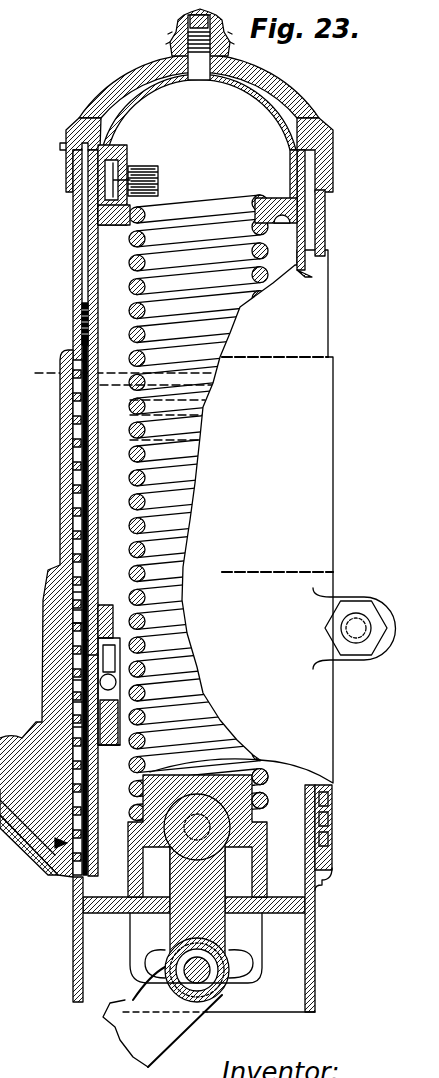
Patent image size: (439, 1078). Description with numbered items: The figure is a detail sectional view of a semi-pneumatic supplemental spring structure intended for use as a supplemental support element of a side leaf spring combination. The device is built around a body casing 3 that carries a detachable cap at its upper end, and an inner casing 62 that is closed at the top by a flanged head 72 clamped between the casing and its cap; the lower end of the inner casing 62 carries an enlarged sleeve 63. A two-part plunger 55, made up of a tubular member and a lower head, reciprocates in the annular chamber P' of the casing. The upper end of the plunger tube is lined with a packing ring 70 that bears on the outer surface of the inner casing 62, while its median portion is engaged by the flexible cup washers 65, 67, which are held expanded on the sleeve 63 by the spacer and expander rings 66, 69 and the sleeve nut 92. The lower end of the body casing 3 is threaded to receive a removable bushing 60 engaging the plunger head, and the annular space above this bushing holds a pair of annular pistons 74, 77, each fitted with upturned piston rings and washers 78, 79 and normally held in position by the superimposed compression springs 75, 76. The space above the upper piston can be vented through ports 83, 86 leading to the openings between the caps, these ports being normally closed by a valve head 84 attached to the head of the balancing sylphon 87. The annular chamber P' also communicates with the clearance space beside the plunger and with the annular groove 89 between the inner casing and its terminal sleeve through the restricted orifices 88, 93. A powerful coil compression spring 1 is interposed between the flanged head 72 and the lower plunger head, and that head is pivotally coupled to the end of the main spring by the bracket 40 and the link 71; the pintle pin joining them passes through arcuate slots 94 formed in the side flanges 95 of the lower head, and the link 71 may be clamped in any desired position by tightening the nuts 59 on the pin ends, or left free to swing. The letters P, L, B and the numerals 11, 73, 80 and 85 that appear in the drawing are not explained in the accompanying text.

The coil compression spring 1 is at (268, 275).
The body casing 3 is at (110, 87).
The bracket arm 11 is at (53, 860).
The bracket 40 is at (127, 1040).
The plunger 55 is at (63, 468).
The nuts 59 is at (197, 1003).
The removable bushing 60 is at (333, 875).
The inner casing 62 is at (307, 240).
The enlarged sleeve 63 is at (107, 615).
The flexible cup washer 65 is at (83, 680).
The spacer and expander ring 66 is at (122, 692).
The flexible cup washer 67 is at (82, 702).
The spacer and expander ring 69 is at (80, 727).
The packing ring 70 is at (85, 313).
The link 71 is at (170, 873).
The flanged head 72 is at (267, 100).
The filler cap 73 is at (181, 57).
The annular piston 74 is at (85, 826).
The compression spring 75 is at (90, 658).
The compression spring 76 is at (73, 423).
The annular piston 77 is at (80, 623).
The piston ring 78 is at (72, 610).
The washer 79 is at (75, 595).
The packing ring 80 is at (85, 643).
The vent port 83 is at (107, 168).
The valve head 84 is at (123, 182).
The spring seat 85 is at (100, 218).
The vent port 86 is at (70, 145).
The balancing sylphon 87 is at (137, 167).
The restricted orifice 88 is at (85, 345).
The annular groove 89 is at (110, 647).
The sleeve nut 92 is at (103, 745).
The restricted orifice 93 is at (100, 660).
The arcuate slots 94 is at (150, 962).
The side flanges 95 is at (137, 938).
The air chamber P is at (233, 160).
The annular chamber P' is at (63, 513).
The liquid level L is at (116, 403).
The bracket B is at (50, 750).